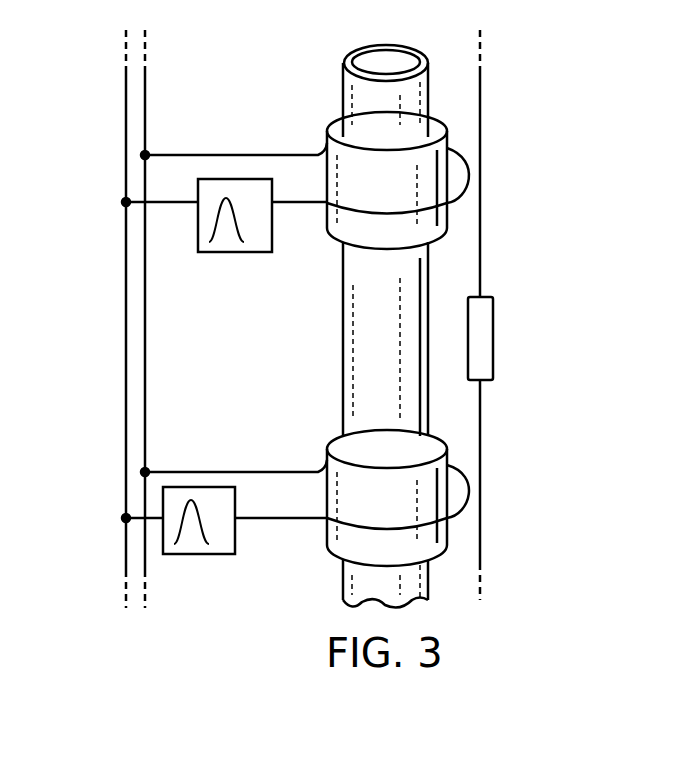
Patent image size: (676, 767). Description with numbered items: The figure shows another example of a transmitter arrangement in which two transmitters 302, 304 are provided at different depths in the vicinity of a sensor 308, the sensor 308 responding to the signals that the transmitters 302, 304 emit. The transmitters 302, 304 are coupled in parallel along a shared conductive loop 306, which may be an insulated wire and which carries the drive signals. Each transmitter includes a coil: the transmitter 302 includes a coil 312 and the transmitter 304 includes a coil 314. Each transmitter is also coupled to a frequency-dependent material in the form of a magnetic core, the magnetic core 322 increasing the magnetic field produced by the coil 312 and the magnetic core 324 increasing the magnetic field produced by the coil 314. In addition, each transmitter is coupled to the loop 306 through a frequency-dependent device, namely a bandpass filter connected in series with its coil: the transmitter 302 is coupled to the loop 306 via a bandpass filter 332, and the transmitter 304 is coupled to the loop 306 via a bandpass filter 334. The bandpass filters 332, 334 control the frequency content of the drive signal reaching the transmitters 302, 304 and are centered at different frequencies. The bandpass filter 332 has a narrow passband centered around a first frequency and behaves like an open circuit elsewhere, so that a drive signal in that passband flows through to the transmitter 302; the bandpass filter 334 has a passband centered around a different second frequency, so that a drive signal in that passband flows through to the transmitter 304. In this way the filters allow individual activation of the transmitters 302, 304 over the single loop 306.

The transmitter 302 is at (500, 108).
The transmitter 304 is at (500, 423).
The shared conductive loop 306 is at (125, 302).
The sensor 308 is at (493, 337).
The coil 312 is at (215, 155).
The coil 314 is at (215, 472).
The magnetic core 322 is at (327, 142).
The magnetic core 324 is at (327, 461).
The bandpass filter 332 is at (235, 252).
The bandpass filter 334 is at (198, 554).